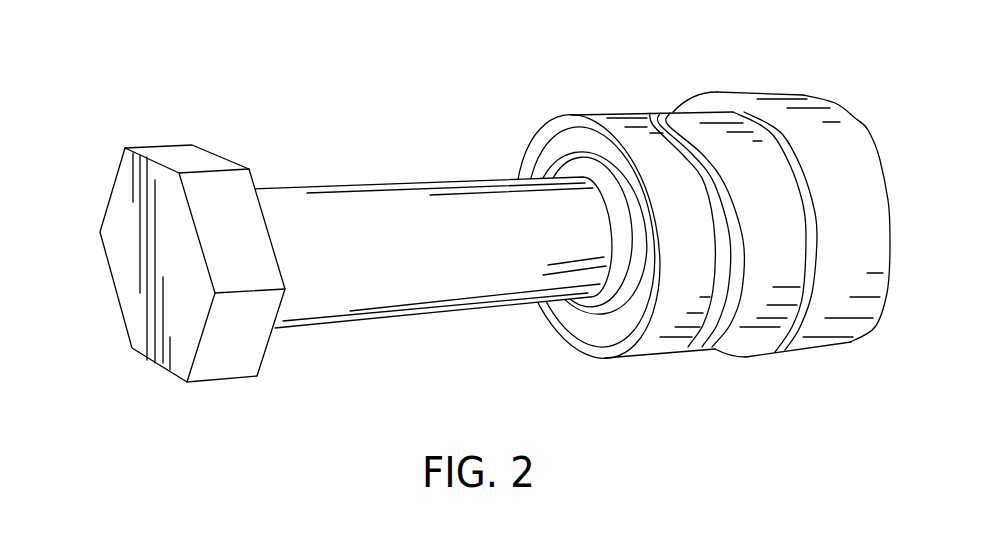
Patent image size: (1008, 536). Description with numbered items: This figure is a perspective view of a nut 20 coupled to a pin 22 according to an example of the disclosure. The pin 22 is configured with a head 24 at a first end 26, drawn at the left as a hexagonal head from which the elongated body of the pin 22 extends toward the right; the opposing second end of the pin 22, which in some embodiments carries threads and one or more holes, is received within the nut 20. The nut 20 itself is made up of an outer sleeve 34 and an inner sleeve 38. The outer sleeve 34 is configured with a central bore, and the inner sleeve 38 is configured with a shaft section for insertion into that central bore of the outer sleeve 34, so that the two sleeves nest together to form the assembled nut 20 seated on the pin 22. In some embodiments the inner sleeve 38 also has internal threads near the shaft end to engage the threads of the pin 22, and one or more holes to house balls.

The nut 20 is at (459, 200).
The pin 22 is at (392, 180).
The head 24 is at (193, 270).
The first end 26 is at (120, 190).
The outer sleeve 34 is at (647, 118).
The inner sleeve 38 is at (797, 340).